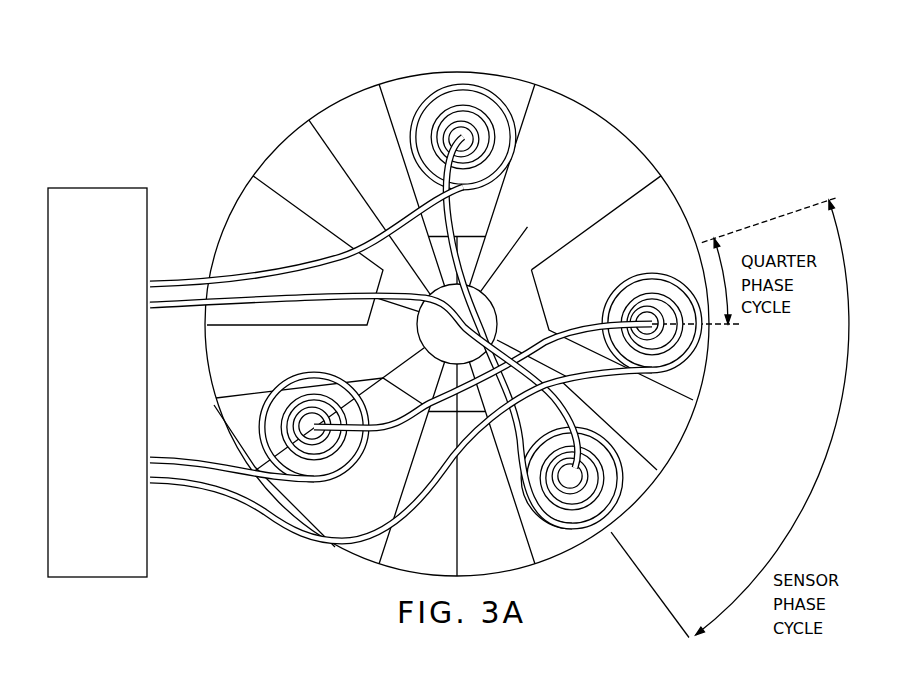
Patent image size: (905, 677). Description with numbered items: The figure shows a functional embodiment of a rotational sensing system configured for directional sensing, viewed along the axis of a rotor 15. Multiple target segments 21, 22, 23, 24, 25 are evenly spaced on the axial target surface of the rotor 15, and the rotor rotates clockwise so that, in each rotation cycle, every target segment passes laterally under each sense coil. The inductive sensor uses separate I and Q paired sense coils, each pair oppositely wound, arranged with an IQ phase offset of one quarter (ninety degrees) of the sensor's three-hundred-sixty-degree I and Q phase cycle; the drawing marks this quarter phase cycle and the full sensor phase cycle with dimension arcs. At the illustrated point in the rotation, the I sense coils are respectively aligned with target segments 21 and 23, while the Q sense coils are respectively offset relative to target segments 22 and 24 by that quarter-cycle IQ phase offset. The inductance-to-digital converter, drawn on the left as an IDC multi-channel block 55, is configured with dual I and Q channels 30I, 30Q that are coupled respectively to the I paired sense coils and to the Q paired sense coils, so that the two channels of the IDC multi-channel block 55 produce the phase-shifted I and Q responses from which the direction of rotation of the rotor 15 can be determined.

The rotor 15 is at (313, 118).
The target segment 21 is at (520, 88).
The target segment 22 is at (662, 205).
The target segment 23 is at (545, 552).
The target segment 24 is at (352, 548).
The target segment 25 is at (303, 217).
The I channel 30I is at (190, 262).
The Q channel 30Q is at (190, 500).
The IDC multi-channel 55 is at (86, 429).